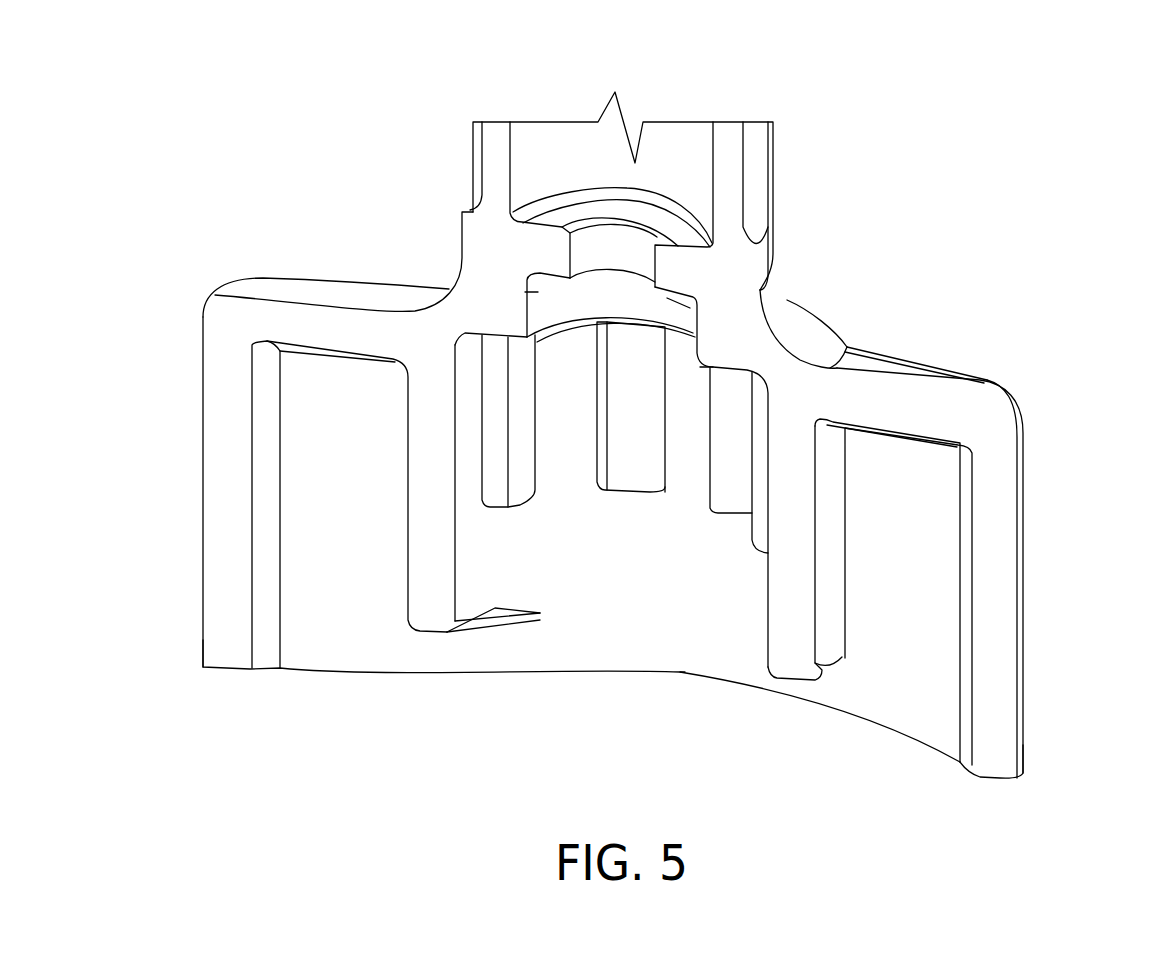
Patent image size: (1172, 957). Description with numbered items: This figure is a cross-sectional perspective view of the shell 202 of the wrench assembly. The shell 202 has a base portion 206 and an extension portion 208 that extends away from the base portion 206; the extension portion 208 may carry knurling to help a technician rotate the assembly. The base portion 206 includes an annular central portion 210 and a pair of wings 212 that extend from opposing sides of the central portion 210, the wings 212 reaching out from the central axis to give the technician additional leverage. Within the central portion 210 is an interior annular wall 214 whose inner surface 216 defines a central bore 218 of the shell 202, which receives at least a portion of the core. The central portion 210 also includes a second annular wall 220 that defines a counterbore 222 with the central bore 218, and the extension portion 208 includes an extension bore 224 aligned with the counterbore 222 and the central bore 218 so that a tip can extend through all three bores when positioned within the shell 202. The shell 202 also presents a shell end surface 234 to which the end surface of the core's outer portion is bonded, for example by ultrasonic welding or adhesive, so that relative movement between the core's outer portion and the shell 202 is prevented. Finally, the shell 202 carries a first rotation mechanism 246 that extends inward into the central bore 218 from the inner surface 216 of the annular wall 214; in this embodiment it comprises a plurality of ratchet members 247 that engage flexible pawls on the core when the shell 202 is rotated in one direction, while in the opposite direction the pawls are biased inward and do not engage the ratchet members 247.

The shell 202 is at (258, 210).
The base portion 206 is at (947, 357).
The extension portion 208 is at (473, 160).
The central portion 210 is at (832, 302).
The wings 212 is at (217, 415).
The interior annular wall 214 is at (797, 653).
The inner surface 216 is at (468, 598).
The central bore 218 is at (675, 630).
The second annular wall 220 is at (533, 292).
The counterbore 222 is at (697, 307).
The extension bore 224 is at (672, 145).
The shell end surface 234 is at (222, 672).
The first rotation mechanism 246 is at (703, 528).
The ratchet members 247 is at (733, 478).